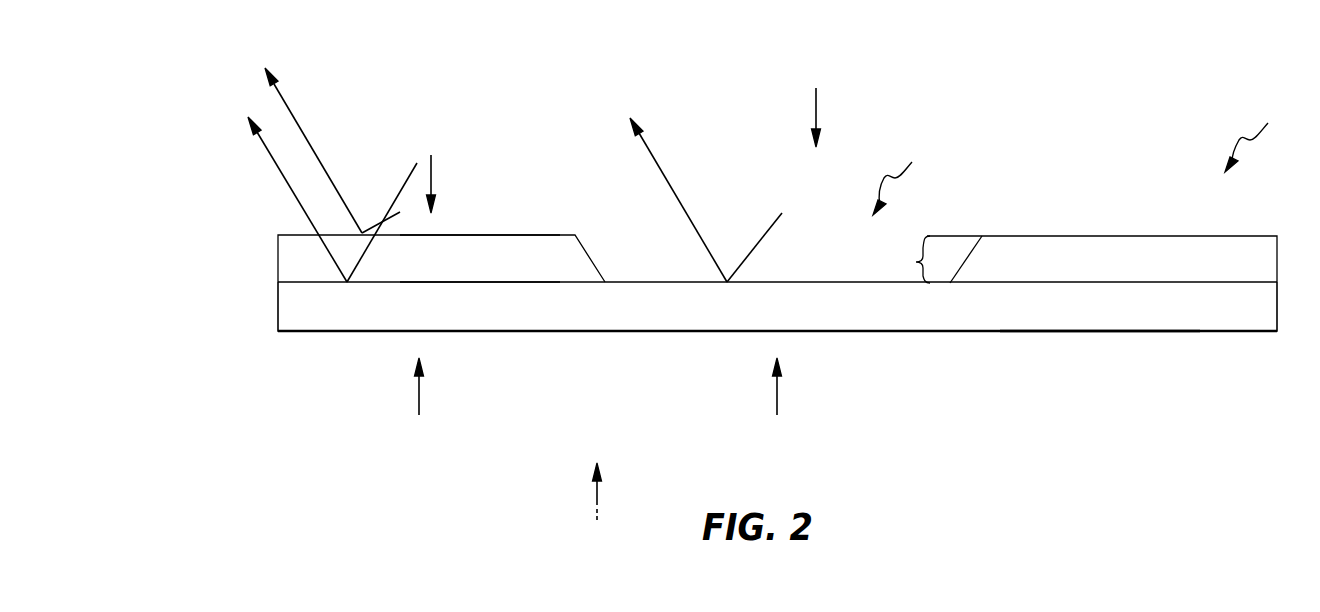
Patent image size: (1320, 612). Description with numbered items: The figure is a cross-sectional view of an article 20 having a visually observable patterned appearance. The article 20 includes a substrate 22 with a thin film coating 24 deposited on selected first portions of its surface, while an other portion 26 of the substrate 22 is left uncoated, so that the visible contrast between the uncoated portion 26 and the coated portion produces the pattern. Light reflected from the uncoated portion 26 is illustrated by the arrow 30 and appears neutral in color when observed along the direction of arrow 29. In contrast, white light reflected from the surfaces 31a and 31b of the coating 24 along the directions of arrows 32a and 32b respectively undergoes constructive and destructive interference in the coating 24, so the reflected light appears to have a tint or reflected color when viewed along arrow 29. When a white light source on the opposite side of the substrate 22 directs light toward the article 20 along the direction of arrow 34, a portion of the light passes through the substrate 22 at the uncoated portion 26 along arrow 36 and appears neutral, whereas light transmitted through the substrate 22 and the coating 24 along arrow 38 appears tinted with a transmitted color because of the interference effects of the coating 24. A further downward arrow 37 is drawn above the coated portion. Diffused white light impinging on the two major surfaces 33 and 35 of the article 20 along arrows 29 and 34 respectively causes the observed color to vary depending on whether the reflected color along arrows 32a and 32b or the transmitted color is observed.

The article 20 is at (1253, 134).
The substrate 22 is at (278, 307).
The coating 24 is at (278, 257).
The uncoated portion 26 is at (900, 174).
The observation direction arrow 29 is at (431, 178).
The reflected rays arrow 30 is at (652, 147).
The first surface of coating 31a is at (468, 233).
The second surface of coating 31b is at (465, 282).
The first reflected light arrow 32a is at (268, 165).
The second reflected light arrow 32b is at (295, 118).
The first major surface 33 is at (910, 259).
The light source direction arrow 34 is at (597, 505).
The second major surface 35 is at (1097, 333).
The transmitted light arrow through uncoated portion 36 is at (777, 395).
The light incident from above 37 is at (816, 112).
The transmitted light arrow through coating 38 is at (419, 395).